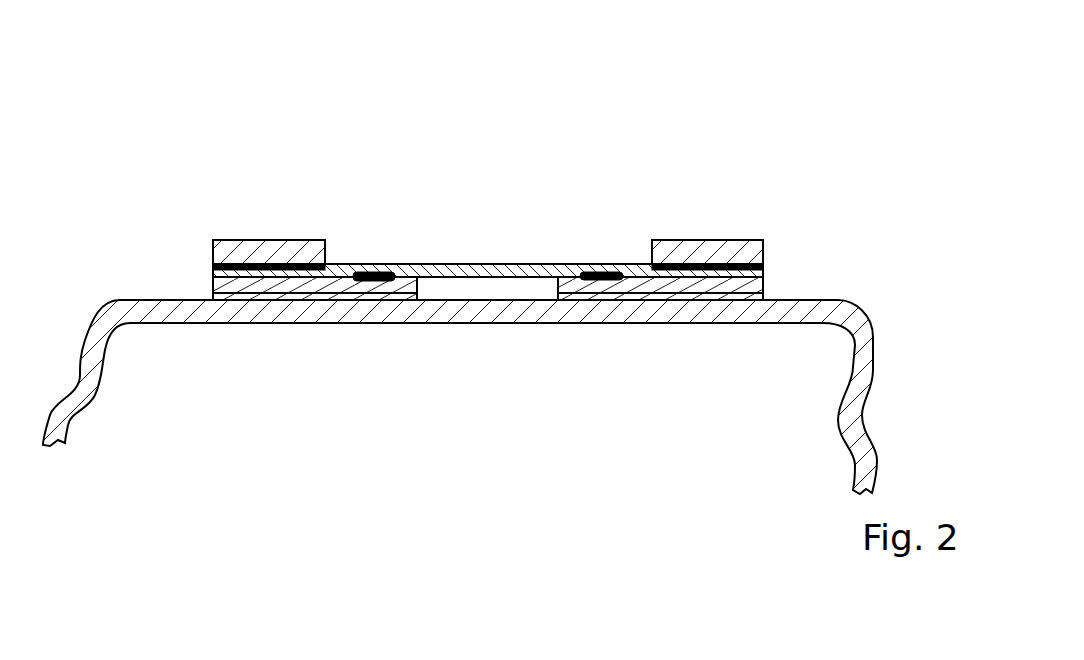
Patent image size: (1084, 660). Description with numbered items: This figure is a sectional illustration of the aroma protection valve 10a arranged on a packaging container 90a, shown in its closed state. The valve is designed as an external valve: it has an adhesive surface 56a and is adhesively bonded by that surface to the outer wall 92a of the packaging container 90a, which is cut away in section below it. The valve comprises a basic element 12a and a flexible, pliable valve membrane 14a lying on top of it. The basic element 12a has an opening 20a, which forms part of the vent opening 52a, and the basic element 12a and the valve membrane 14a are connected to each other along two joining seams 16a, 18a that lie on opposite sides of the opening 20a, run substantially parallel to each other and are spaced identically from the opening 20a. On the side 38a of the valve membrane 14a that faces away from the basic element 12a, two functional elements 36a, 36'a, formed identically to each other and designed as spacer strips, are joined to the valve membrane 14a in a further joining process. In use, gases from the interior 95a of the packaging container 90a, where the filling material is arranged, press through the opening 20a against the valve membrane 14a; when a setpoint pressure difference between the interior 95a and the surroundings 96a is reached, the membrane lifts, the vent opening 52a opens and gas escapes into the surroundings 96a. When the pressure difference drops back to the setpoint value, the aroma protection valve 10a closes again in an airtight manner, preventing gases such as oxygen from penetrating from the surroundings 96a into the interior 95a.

The aroma protection valve 10a is at (200, 203).
The basic element 12a is at (213, 287).
The valve membrane 14a is at (427, 273).
The joining seam 16a is at (373, 275).
The joining seam 18a is at (607, 280).
The opening 20a is at (474, 295).
The functional element 36a is at (706, 252).
The further functional element 36'a is at (273, 199).
The side of the valve membrane 38a is at (620, 268).
The vent opening 52a is at (513, 311).
The adhesive surface 56a is at (213, 297).
The packaging container 90a is at (148, 310).
The outer wall 92a is at (783, 300).
The interior 95a is at (333, 351).
The surroundings 96a is at (502, 204).